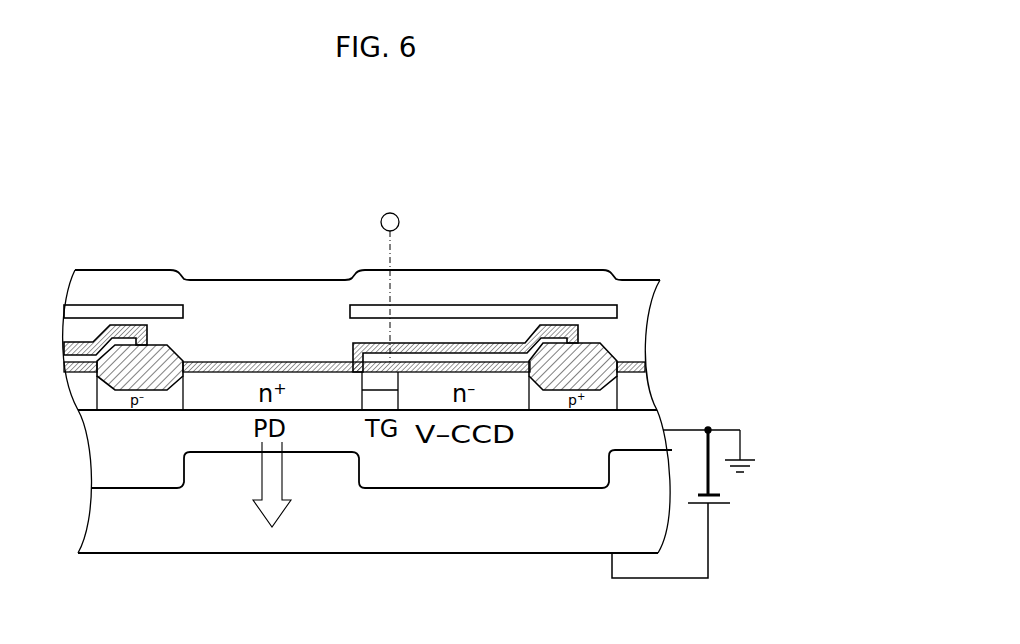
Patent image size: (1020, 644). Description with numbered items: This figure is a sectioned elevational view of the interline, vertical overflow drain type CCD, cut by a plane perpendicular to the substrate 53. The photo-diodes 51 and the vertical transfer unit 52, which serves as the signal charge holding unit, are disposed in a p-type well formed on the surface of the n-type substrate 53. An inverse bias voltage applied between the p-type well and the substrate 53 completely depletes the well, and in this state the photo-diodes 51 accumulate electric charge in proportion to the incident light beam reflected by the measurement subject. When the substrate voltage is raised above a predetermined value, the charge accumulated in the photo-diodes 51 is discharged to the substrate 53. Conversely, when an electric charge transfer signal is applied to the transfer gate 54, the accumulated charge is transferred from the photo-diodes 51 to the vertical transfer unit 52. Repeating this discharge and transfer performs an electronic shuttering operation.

The photo-diode 51 is at (215, 433).
The vertical transfer unit 52 is at (508, 468).
The substrate 53 is at (365, 528).
The transfer gate 54 is at (377, 402).